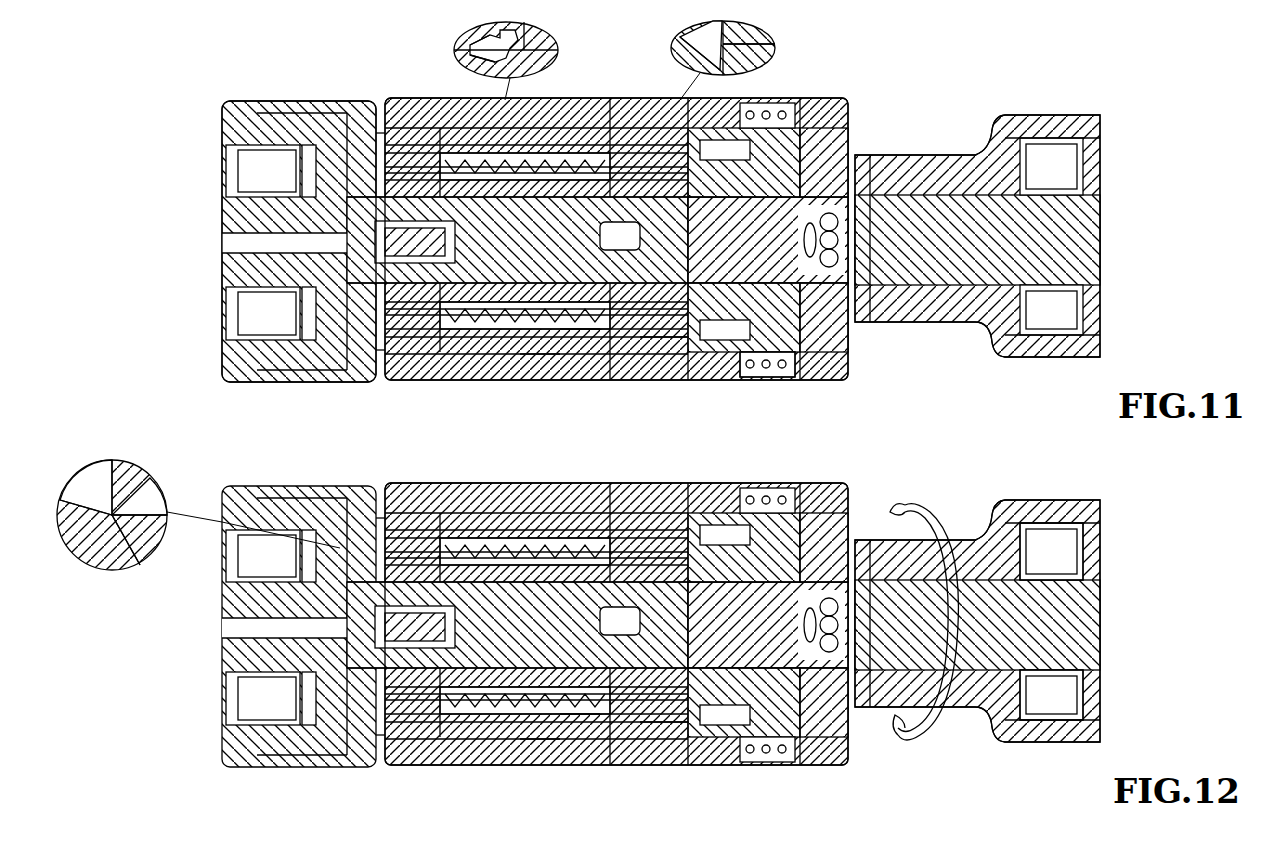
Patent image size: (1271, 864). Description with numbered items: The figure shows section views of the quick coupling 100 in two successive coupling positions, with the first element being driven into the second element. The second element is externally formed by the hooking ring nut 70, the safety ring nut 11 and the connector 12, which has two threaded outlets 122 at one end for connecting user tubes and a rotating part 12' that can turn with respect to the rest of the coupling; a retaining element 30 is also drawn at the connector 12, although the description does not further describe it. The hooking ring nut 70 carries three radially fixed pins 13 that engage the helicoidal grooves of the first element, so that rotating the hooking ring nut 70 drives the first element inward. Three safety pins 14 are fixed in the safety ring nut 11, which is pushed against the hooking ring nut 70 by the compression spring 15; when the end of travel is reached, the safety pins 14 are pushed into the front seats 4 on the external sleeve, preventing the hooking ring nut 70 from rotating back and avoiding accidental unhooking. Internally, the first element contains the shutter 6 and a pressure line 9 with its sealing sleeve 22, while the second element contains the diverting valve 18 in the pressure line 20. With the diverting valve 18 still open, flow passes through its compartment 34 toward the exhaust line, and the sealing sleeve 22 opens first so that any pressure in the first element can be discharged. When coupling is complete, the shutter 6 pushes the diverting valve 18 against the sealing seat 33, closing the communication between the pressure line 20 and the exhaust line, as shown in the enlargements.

In FIG. 11, the quick coupling 100 is at (290, 78).
In FIG. 12, the quick coupling 100 is at (280, 462).
In FIG. 11, the shutter 6 is at (318, 383).
In FIG. 11, the hooking ring nut 70 is at (440, 381).
In FIG. 12, the hooking ring nut 70 is at (446, 766).
In FIG. 11, the radially fixed pins 13 is at (540, 373).
In FIG. 11, the safety pins 14 is at (572, 373).
In FIG. 12, the safety pins 14 is at (562, 758).
In FIG. 11, the safety ring nut 11 is at (663, 372).
In FIG. 12, the safety ring nut 11 is at (658, 758).
In FIG. 11, the compression spring 15 is at (706, 376).
In FIG. 11, the connector 12 is at (977, 200).
In FIG. 12, the rotating part of connector 12' is at (977, 588).
In FIG. 11, the pressure line 20 is at (545, 34).
In FIG. 11, the sealing sleeve 22 is at (480, 35).
In FIG. 11, the pressure line 9 is at (465, 60).
In FIG. 11, the sealing seat 33 is at (705, 25).
In FIG. 11, the diverting valve 18 is at (683, 53).
In FIG. 12, the diverting valve 18 is at (108, 575).
In FIG. 11, the compartment 34 is at (745, 60).
In FIG. 12, the compartment 34 is at (145, 540).
In FIG. 12, the retaining clip 30 is at (860, 540).
In FIG. 12, the front seats 4 is at (542, 766).
In FIG. 12, the threaded outlets 122 is at (1051, 621).